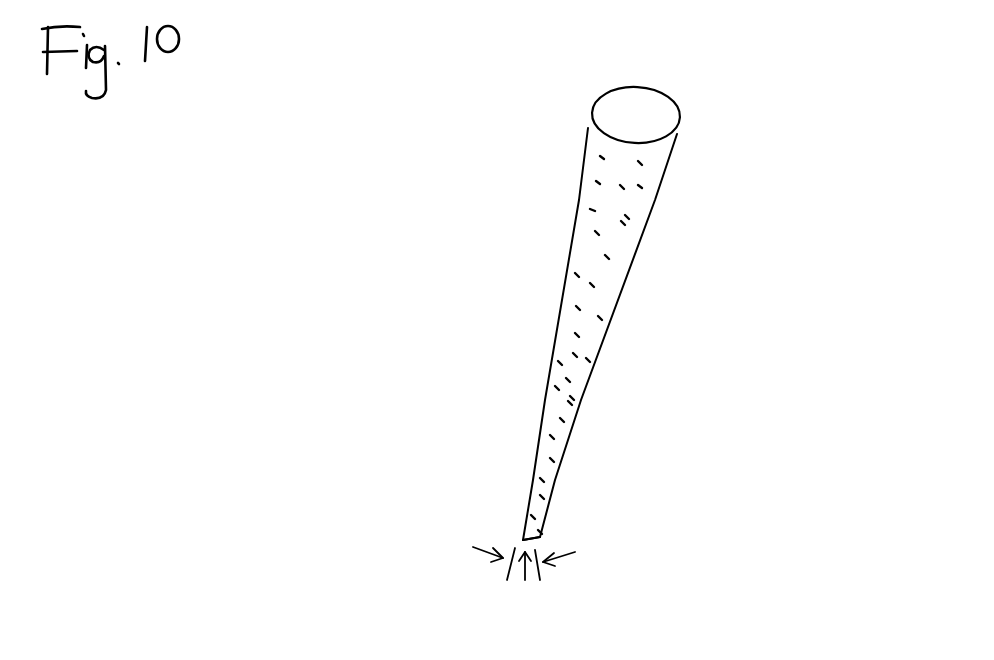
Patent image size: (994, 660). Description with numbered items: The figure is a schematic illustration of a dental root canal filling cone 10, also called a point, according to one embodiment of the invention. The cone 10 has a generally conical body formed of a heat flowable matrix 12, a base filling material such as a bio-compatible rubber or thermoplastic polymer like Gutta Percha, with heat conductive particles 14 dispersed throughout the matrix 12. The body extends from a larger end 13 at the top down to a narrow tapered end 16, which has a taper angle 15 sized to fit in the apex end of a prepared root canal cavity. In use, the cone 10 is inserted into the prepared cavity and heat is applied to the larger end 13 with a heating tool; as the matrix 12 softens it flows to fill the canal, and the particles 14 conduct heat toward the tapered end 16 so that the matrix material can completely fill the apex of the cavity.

The dental root canal filling cone 10 is at (792, 120).
The heat flowable matrix 12 is at (627, 203).
The larger end 13 is at (645, 112).
The heat conductive particles 14 is at (607, 280).
The taper angle 15 is at (524, 583).
The tapered end 16 is at (537, 536).